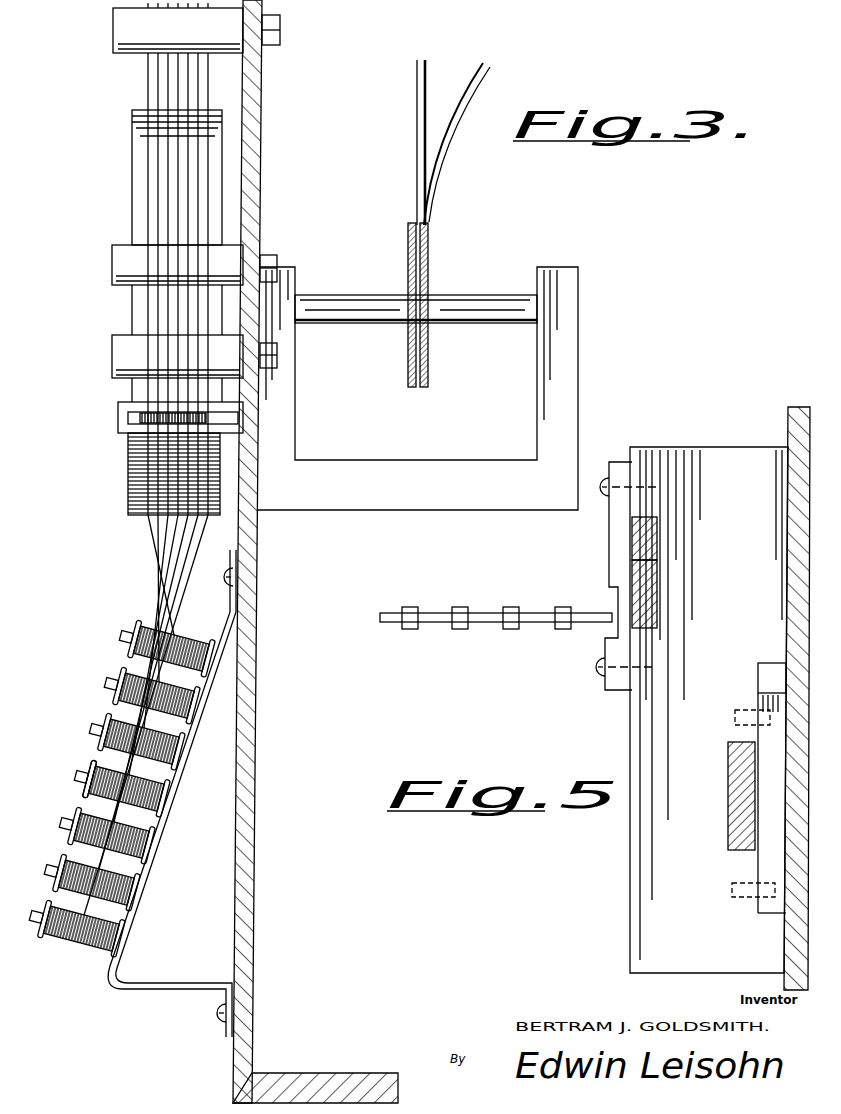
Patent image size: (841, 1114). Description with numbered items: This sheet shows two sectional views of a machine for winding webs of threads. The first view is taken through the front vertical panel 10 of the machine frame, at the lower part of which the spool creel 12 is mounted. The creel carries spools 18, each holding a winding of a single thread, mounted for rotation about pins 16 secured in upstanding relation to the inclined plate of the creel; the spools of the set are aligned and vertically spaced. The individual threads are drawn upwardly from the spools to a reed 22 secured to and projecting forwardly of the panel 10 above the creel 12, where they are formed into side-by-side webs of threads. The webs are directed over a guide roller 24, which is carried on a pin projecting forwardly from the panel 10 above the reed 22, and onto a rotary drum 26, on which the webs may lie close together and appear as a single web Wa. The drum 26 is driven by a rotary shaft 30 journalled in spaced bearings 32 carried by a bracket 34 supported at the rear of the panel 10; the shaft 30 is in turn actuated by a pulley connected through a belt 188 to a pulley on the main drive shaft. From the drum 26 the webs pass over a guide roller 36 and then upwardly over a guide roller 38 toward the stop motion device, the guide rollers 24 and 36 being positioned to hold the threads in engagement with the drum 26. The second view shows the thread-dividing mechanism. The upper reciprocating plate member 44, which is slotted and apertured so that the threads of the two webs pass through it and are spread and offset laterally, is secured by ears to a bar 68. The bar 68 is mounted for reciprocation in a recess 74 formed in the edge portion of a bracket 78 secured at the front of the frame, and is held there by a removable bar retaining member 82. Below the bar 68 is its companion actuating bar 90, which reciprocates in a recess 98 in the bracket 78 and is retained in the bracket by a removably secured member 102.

In FIG. 3, the front vertical panel 10 is at (258, 953).
In FIG. 3, the spool creel 12 is at (121, 995).
In FIG. 3, the pins 16 is at (112, 645).
In FIG. 3, the spools 18 is at (60, 856).
In FIG. 3, the reed 22 is at (117, 427).
In FIG. 3, the guide roller 24 is at (113, 358).
In FIG. 3, the rotary drum 26 is at (130, 172).
In FIG. 3, the rotary shaft 30 is at (482, 306).
In FIG. 3, the bearings 32 is at (298, 272).
In FIG. 3, the bracket 34 is at (377, 511).
In FIG. 3, the guide roller 36 is at (116, 266).
In FIG. 3, the guide roller 38 is at (116, 31).
In FIG. 5, the upper reciprocating plate member 44 is at (486, 627).
In FIG. 5, the bar 68 is at (641, 590).
In FIG. 5, the recess 74 is at (640, 562).
In FIG. 5, the bracket 78 is at (711, 444).
In FIG. 5, the removable bar retaining member 82 is at (614, 546).
In FIG. 5, the companion actuating bar 90 is at (736, 836).
In FIG. 5, the recess 98 is at (733, 800).
In FIG. 5, the removably secured member 102 is at (764, 863).
In FIG. 3, the belt 188 is at (470, 85).
In FIG. 3, the thread web Wa is at (146, 221).